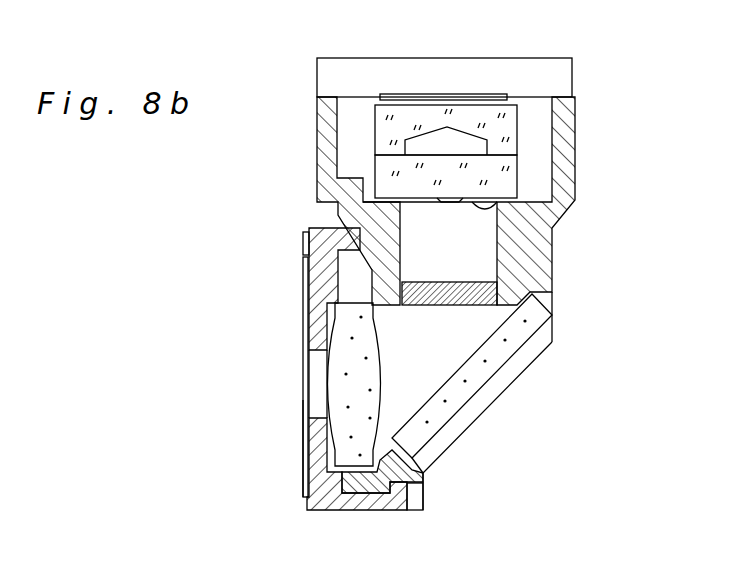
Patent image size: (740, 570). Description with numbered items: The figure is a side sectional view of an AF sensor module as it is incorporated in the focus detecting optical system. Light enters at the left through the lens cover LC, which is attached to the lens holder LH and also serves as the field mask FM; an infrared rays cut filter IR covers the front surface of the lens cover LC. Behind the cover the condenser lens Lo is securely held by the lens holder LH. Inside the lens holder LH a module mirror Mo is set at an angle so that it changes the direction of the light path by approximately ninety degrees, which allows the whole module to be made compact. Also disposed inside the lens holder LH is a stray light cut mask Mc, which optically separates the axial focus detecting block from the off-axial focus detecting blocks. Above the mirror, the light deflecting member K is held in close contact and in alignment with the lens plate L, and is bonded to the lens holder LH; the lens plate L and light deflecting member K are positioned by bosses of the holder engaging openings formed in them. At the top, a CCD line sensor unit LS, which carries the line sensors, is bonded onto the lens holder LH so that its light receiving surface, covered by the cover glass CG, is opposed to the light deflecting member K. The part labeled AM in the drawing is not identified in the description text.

The CCD line sensor unit LS is at (558, 73).
The cover glass CG is at (450, 96).
The light deflecting member K is at (507, 125).
The lens plate L is at (507, 177).
The aperture member AM is at (553, 215).
The lens holder LH is at (532, 242).
The lens cover LC is at (320, 240).
The field mask FM is at (305, 363).
The condenser lens Lo is at (343, 388).
The infrared rays cut filter IR is at (307, 450).
The stray light cut mask Mc is at (472, 305).
The module mirror Mo is at (483, 380).